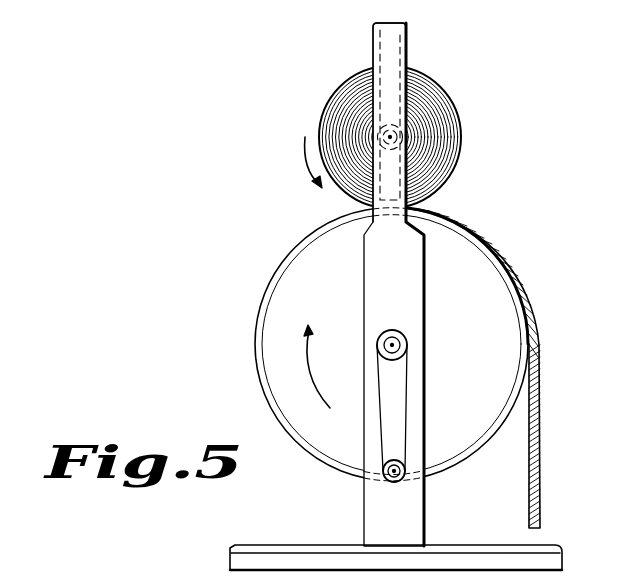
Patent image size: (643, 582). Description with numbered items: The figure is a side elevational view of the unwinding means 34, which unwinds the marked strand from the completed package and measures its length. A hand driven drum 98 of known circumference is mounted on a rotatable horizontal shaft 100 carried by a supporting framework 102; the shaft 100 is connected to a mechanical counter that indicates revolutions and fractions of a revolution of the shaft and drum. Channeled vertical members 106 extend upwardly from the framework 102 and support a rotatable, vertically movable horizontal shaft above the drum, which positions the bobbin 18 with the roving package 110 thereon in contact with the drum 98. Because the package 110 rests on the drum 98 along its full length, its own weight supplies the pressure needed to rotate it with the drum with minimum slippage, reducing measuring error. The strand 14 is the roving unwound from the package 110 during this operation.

The strip 14 is at (541, 436).
The bobbin 18 is at (424, 135).
The unwinding means 34 is at (502, 188).
The drum 98 is at (497, 301).
The shaft 100 is at (392, 345).
The supporting framework 102 is at (424, 284).
The channeled vertical members 106 is at (410, 40).
The roving package 110 is at (456, 110).